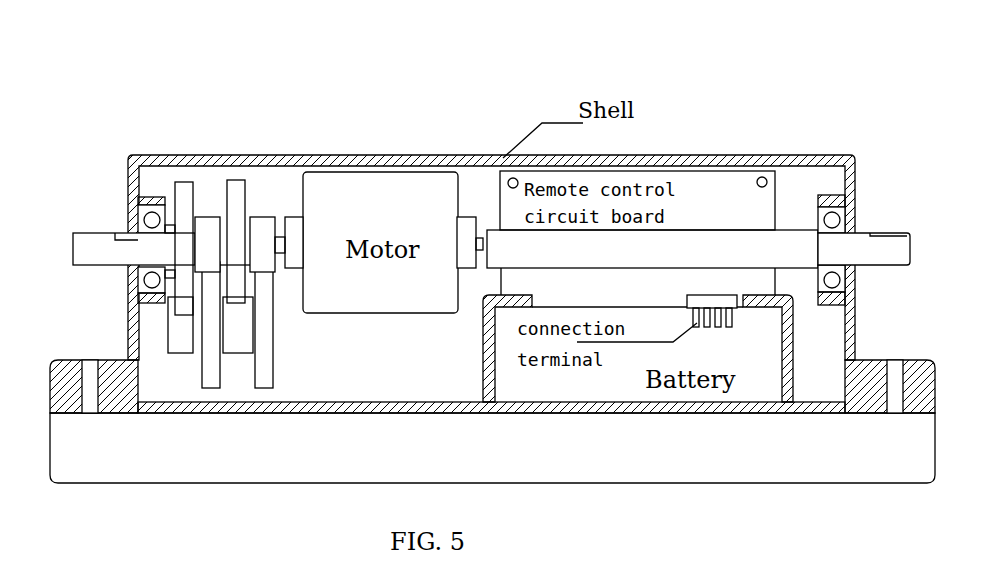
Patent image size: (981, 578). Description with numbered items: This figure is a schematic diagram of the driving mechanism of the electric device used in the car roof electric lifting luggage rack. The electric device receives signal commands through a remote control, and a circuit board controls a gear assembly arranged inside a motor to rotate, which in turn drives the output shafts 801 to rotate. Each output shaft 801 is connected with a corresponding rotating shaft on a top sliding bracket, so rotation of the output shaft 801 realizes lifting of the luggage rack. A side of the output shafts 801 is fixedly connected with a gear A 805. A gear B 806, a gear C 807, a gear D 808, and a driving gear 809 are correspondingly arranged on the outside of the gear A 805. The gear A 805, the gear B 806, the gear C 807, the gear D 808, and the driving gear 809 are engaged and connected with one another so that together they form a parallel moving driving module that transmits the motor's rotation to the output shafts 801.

The output shaft 801 is at (102, 250).
The gear A 805 is at (187, 195).
The gear B 806 is at (212, 370).
The gear C 807 is at (238, 200).
The gear D 808 is at (263, 369).
The driving gear 809 is at (265, 248).